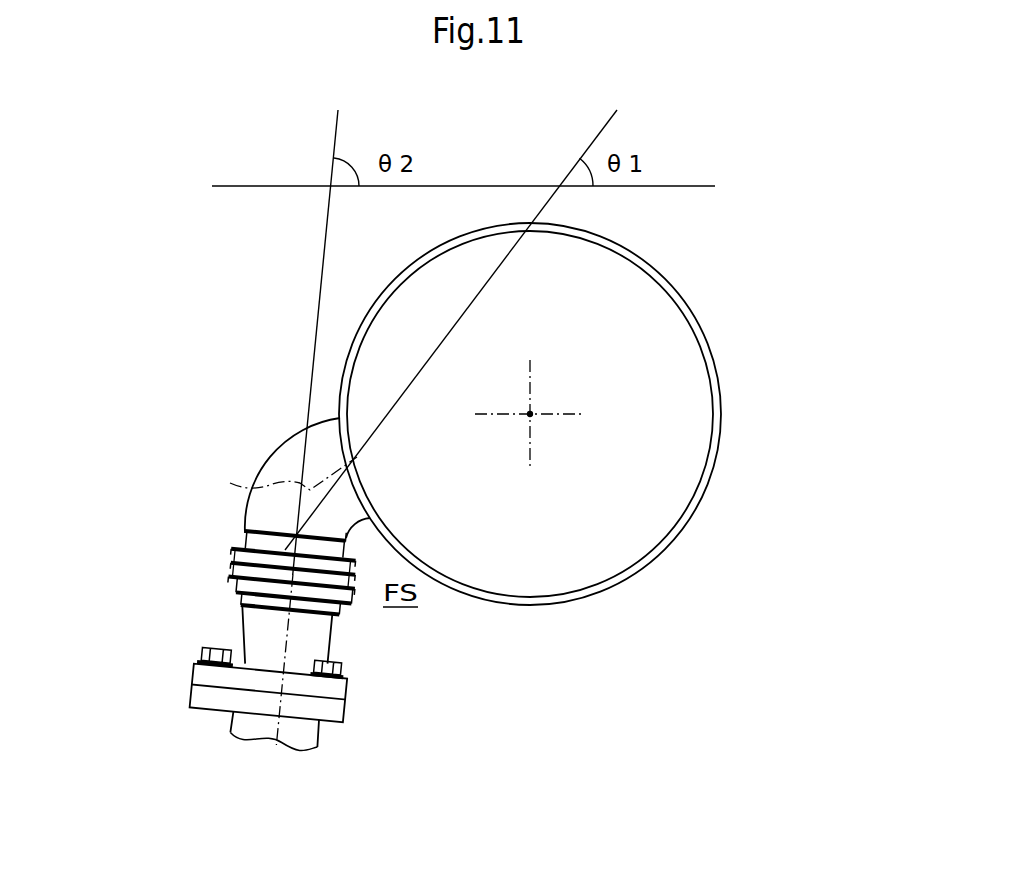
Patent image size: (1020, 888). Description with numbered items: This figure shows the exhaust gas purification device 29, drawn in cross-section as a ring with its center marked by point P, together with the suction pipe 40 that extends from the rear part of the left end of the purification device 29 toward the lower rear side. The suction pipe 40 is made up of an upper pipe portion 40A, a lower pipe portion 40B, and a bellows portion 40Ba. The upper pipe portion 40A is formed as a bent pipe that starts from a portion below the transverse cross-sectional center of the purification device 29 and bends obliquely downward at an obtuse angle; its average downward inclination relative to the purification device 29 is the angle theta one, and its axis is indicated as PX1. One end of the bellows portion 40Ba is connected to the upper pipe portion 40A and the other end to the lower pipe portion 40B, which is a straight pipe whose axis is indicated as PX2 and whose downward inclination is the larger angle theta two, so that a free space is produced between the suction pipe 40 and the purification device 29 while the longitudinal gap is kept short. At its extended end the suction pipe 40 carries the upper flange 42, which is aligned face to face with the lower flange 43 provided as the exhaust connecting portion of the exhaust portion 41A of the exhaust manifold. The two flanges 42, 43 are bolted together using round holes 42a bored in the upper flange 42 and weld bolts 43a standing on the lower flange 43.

The exhaust gas purification device 29 is at (687, 311).
The center point of drum P is at (533, 410).
The suction pipe 40 is at (287, 549).
The upper pipe portion 40A is at (295, 440).
The lower pipe portion 40B is at (327, 628).
The bellows portion 40Ba is at (233, 563).
The axis of bent portion PX1 is at (267, 475).
The axis of straight portion PX2 is at (280, 640).
The exhaust portion 41A is at (317, 733).
The upper flange 42 is at (196, 667).
The round holes 42a is at (413, 681).
The lower flange 43 is at (197, 697).
The weld bolts 43a is at (343, 663).